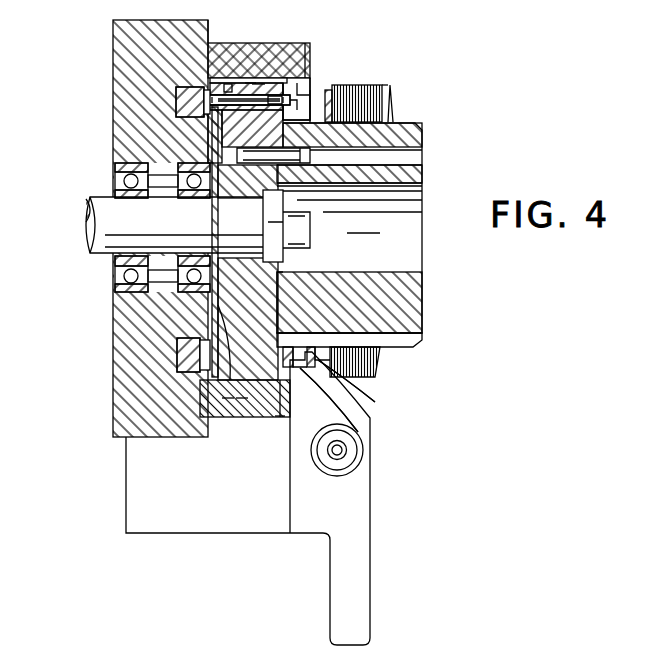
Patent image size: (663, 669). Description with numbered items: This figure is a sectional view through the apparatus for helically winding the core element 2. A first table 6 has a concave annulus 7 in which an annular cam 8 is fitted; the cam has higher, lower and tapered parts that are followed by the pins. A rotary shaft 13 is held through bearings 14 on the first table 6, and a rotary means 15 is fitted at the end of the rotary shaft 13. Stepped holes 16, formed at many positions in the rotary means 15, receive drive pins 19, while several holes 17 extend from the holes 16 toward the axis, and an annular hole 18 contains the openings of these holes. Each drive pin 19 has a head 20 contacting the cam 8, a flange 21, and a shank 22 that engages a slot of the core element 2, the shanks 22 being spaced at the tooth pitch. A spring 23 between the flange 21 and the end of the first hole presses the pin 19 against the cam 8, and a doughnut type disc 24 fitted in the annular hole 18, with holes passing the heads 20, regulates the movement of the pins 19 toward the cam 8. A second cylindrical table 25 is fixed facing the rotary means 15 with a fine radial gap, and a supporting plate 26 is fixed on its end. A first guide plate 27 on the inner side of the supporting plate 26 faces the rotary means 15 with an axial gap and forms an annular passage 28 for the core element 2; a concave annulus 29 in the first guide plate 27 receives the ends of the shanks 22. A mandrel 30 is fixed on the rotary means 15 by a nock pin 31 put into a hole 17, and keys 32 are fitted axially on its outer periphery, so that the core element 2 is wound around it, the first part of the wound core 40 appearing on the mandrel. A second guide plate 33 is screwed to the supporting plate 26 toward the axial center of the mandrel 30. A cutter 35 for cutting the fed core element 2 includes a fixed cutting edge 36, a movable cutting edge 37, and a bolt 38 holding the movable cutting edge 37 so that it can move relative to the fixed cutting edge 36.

The core element 2 is at (370, 360).
The first table 6 is at (118, 68).
The concave annulus 7 is at (190, 80).
The annular cam 8 is at (180, 103).
The rotary shaft 13 is at (103, 231).
The bearings 14 is at (118, 165).
The rotary means 15 is at (208, 380).
The holes 16 is at (274, 100).
The holes 17 is at (252, 143).
The annular hole 18 is at (228, 400).
The drive pins 19 is at (275, 61).
The head 20 is at (227, 87).
The flange 21 is at (250, 83).
The shank 22 is at (297, 107).
The spring 23 is at (258, 84).
The doughnut type disc 24 is at (210, 308).
The second cylindrical table 25 is at (242, 400).
The supporting plate 26 is at (310, 73).
The first guide plate 27 is at (313, 97).
The annular passage 28 is at (278, 418).
The concave annulus 29 is at (380, 80).
The mandrel 30 is at (410, 292).
The nock pin 31 is at (313, 187).
The keys 32 is at (400, 338).
The second guide plate 33 is at (370, 82).
The cutter 35 is at (372, 542).
The fixed cutting edge 36 is at (375, 400).
The movable cutting edge 37 is at (350, 428).
The bolt 38 is at (340, 455).
The first part of the wound core 40 is at (395, 106).